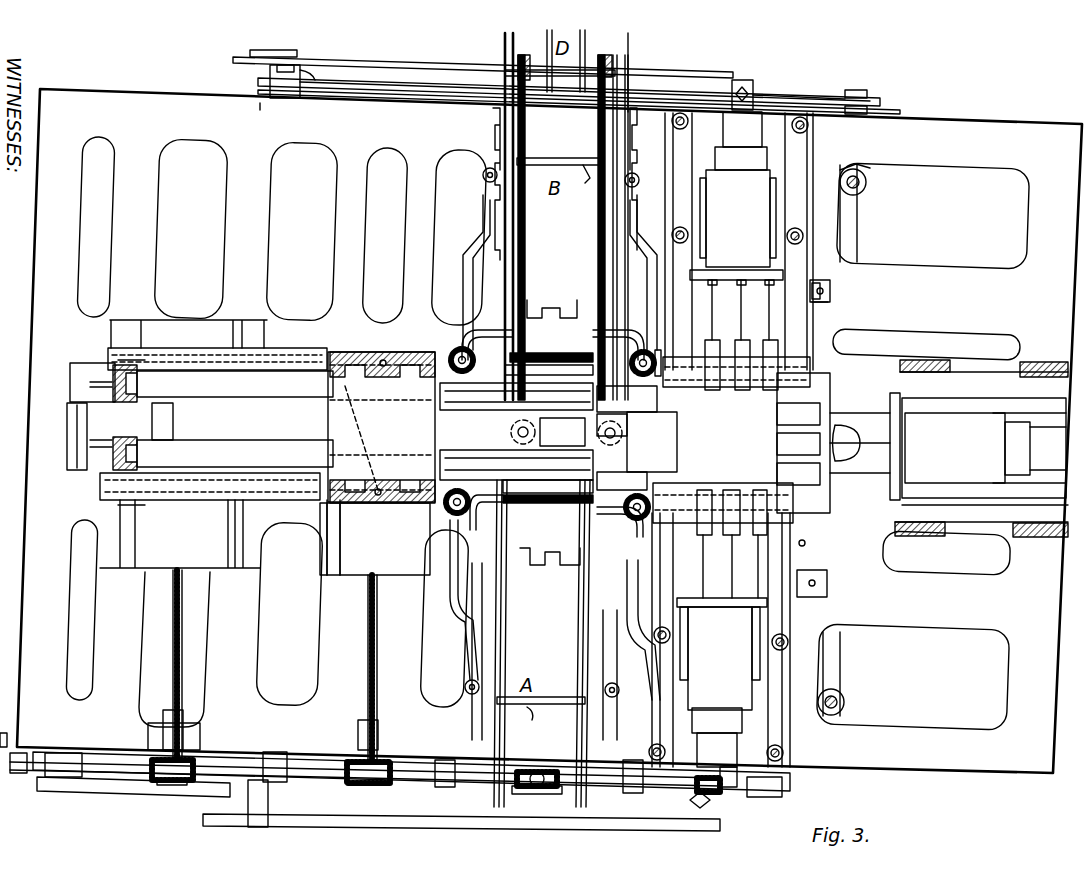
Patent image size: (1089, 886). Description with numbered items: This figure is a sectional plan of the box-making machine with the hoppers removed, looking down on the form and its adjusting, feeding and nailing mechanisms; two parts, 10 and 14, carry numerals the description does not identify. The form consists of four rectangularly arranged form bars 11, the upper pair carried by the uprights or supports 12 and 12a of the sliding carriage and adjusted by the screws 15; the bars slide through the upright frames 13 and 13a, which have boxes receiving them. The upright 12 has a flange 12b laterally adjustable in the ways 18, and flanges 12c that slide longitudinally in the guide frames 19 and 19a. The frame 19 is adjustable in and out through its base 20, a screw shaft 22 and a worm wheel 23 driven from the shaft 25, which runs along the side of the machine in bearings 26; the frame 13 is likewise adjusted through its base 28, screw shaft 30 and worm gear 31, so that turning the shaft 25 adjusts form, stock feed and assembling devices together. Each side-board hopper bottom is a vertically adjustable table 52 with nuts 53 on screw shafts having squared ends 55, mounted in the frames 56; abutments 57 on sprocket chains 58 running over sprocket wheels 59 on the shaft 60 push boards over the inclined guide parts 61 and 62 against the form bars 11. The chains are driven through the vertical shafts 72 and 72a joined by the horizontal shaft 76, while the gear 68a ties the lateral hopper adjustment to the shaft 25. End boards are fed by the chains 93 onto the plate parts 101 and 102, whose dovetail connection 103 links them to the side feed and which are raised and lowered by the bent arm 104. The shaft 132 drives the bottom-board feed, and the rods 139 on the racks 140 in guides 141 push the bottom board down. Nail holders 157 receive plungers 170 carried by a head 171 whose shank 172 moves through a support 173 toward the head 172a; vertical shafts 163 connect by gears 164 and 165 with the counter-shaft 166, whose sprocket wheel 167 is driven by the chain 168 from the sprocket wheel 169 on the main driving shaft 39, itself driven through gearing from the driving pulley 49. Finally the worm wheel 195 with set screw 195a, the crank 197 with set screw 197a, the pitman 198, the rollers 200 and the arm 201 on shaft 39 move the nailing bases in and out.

The frame plate 10 is at (345, 205).
The form bars 11 is at (232, 455).
The upright support 12 is at (110, 470).
The upright support 12a is at (75, 393).
The flange 12b is at (108, 440).
The flanges 12c is at (140, 360).
The upright frame 13 is at (375, 500).
The upright frame 13a is at (383, 360).
The slide block 14 is at (390, 460).
The screws 15 is at (378, 490).
The ways 18 is at (70, 416).
The guide frame 19 is at (232, 572).
The guide frame 19a is at (288, 355).
The base 20 is at (212, 572).
The screw shaft 22 is at (182, 590).
The worm wheel 23 is at (165, 790).
The shaft 25 is at (423, 790).
The bearings 26 is at (65, 800).
The base 28 is at (375, 539).
The screw shaft 30 is at (378, 633).
The worm gear 31 is at (368, 790).
The main driving shaft 39 is at (300, 64).
The driving pulley 49 is at (110, 800).
The table 52 is at (620, 722).
The nuts 53 is at (492, 180).
The squared ends 55 is at (483, 178).
The frames 56 is at (490, 135).
The abutments 57 is at (560, 448).
The sprocket chains 58 is at (600, 135).
The sprocket wheels 59 is at (598, 85).
The shaft 60 is at (548, 800).
The upper guide part 61 is at (548, 300).
The lower guide part 62 is at (548, 435).
The gear 68a is at (553, 800).
The vertical shaft 72 is at (457, 488).
The vertical shaft 72a is at (650, 507).
The horizontal shaft 76 is at (553, 435).
The feed chains 93 is at (565, 63).
The feed plate part 101 is at (683, 424).
The feed plate part 102 is at (627, 410).
The dovetail connection 103 is at (618, 486).
The bent arm 104 is at (565, 432).
The shaft 132 is at (805, 545).
The vertically moving rods 139 is at (835, 290).
The racks 140 is at (828, 300).
The guide 141 is at (832, 300).
The nail holders 157 is at (800, 390).
The vertical shafts 163 is at (866, 180).
The gear 164 is at (867, 192).
The gear 165 is at (865, 170).
The counter-shaft 166 is at (850, 235).
The sprocket wheel 167 is at (885, 100).
The chain 168 is at (799, 81).
The sprocket wheel 169 is at (258, 84).
The plungers 170 is at (715, 345).
The head 171 is at (892, 470).
The shank 172 is at (861, 457).
The head 172a is at (902, 284).
The support 173 is at (872, 440).
The worm wheel 195 is at (752, 796).
The set screw 195a is at (687, 797).
The crank 197 is at (738, 80).
The set screw 197a is at (715, 825).
The pitman 198 is at (640, 800).
The rollers 200 is at (240, 58).
The arm 201 is at (290, 45).